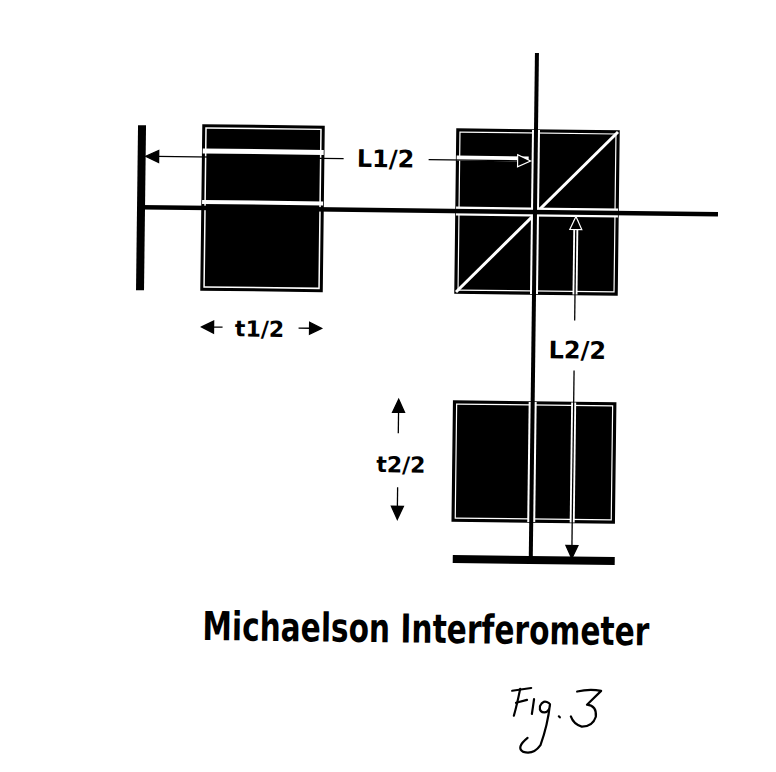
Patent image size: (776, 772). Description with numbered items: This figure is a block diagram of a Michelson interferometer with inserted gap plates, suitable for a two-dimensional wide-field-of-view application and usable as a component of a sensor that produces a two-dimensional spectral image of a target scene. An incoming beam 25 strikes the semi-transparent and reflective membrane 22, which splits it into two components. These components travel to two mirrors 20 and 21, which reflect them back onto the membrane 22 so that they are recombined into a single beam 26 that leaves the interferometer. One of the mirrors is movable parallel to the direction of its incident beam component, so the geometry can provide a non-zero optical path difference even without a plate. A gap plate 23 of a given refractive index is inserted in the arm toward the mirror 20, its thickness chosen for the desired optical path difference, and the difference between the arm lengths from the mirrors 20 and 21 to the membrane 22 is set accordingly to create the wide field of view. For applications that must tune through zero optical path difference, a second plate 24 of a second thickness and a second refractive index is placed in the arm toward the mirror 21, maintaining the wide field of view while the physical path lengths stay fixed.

The mirror 20 is at (132, 130).
The mirror 21 is at (621, 572).
The semi-transparent and reflective membrane 22 is at (625, 162).
The gap plate 23 is at (199, 303).
The second plate 24 is at (623, 464).
The beam 25 is at (553, 59).
The beam 26 is at (716, 185).